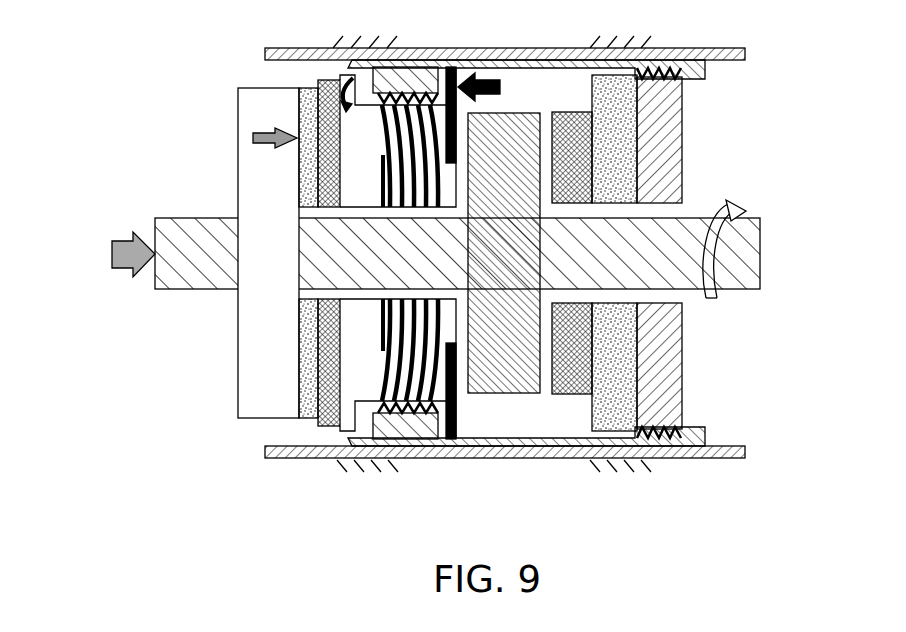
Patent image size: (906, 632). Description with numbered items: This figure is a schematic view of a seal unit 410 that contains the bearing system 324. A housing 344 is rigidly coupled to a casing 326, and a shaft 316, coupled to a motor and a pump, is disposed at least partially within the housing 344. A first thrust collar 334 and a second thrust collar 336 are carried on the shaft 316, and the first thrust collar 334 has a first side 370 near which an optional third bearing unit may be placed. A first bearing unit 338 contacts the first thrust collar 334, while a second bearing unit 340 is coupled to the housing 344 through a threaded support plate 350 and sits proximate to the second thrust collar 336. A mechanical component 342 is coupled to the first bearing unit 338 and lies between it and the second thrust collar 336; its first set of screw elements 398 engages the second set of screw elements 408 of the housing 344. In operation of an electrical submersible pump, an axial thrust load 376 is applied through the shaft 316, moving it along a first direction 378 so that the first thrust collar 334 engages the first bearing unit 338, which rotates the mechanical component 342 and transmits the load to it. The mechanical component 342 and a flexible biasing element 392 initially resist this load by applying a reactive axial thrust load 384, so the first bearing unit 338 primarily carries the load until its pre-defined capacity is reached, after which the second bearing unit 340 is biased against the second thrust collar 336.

The shaft 316 is at (757, 233).
The bearing system 324 is at (752, 96).
The casing 326 is at (290, 48).
The first thrust collar 334 is at (250, 418).
The second thrust collar 336 is at (505, 380).
The first bearing unit 338 is at (325, 428).
The second bearing unit 340 is at (592, 368).
The mechanical component 342 is at (355, 377).
The housing 344 is at (432, 61).
The threaded support plate 350 is at (685, 150).
The first side 370 is at (239, 308).
The axial thrust load 376 is at (120, 238).
The first direction 378 is at (112, 142).
The reactive axial thrust load 384 is at (488, 71).
The flexible biasing element 392 is at (458, 420).
The first set of screw elements 398 is at (410, 311).
The second set of screw elements 408 is at (424, 410).
The seal unit 410 is at (256, 60).